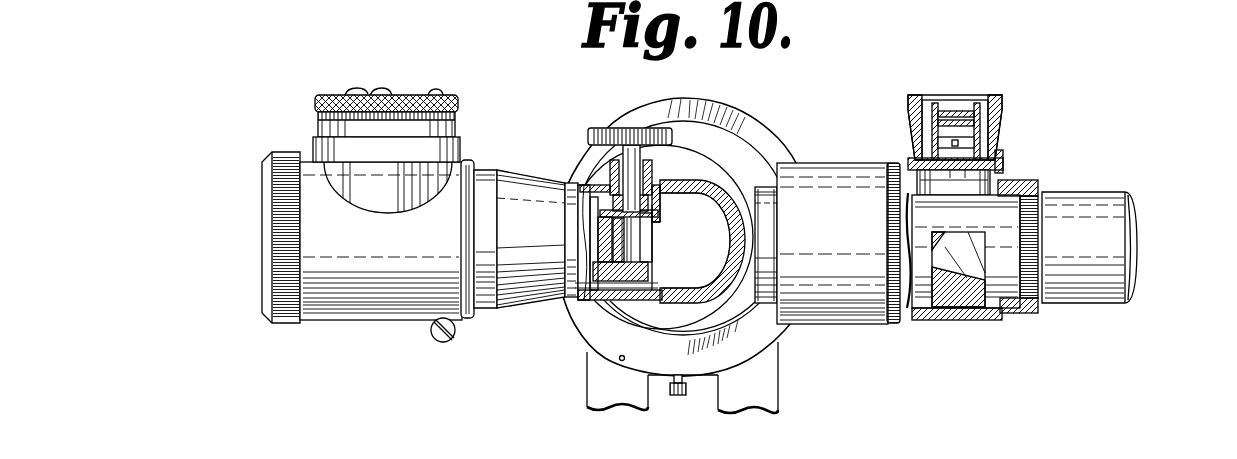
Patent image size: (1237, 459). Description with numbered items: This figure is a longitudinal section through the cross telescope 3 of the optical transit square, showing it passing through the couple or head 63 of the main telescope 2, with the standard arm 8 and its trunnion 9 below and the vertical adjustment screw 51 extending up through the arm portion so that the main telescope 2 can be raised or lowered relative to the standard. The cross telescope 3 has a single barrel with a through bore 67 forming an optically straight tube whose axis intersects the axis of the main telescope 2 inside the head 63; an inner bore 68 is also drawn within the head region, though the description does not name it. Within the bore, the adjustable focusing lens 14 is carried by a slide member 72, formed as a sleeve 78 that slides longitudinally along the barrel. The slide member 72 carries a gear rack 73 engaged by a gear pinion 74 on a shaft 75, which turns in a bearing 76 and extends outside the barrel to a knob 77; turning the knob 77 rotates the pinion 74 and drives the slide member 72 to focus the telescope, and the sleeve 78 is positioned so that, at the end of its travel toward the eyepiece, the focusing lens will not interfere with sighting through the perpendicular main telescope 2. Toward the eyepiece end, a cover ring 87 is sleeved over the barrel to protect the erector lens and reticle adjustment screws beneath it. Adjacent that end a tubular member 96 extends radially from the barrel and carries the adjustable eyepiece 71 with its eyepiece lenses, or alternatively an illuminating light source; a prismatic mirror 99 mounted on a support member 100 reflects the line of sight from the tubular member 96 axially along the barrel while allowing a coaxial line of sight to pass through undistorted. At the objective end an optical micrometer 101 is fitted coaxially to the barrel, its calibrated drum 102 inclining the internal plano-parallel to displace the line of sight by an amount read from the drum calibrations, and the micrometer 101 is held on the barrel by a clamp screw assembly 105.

The main telescope 2 is at (712, 185).
The cross telescope 3 is at (508, 306).
The standard arm 8 is at (769, 394).
The trunnion 9 is at (747, 113).
The adjustable focusing lens 14 is at (572, 316).
The adjustment screw 51 is at (690, 393).
The couple or head 63 is at (698, 312).
The through bore 67 is at (653, 285).
The inner bore 68 is at (725, 213).
The adjustable eyepiece 71 is at (1003, 103).
The slide member 72 is at (600, 212).
The gear rack 73 is at (608, 192).
The gear pinion 74 is at (693, 182).
The shaft 75 is at (598, 127).
The bearing 76 is at (653, 180).
The knob 77 is at (592, 128).
The sleeve 78 is at (672, 258).
The cover ring 87 is at (818, 163).
The tubular member 96 is at (1003, 162).
The prismatic mirror 99 is at (965, 285).
The support member 100 is at (942, 305).
The optical micrometer 101 is at (305, 322).
The calibrated drum 102 is at (315, 110).
The clamp screw assembly 105 is at (434, 337).